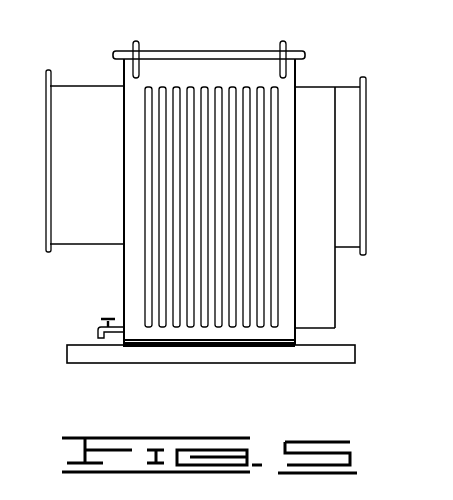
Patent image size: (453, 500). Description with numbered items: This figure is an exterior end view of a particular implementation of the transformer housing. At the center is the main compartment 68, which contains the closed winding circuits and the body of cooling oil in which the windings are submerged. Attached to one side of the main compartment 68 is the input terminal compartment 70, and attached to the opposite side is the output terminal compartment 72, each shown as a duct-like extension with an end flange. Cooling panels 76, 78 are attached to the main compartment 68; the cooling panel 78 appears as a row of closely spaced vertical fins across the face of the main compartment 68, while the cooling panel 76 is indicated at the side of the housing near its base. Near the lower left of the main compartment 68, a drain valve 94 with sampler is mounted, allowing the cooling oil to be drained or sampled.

The main compartment 68 is at (207, 52).
The input terminal compartment 70 is at (353, 86).
The output terminal compartment 72 is at (93, 85).
The cooling panel 76 is at (347, 307).
The cooling panel 78 is at (166, 332).
The drain valve 94 is at (94, 328).